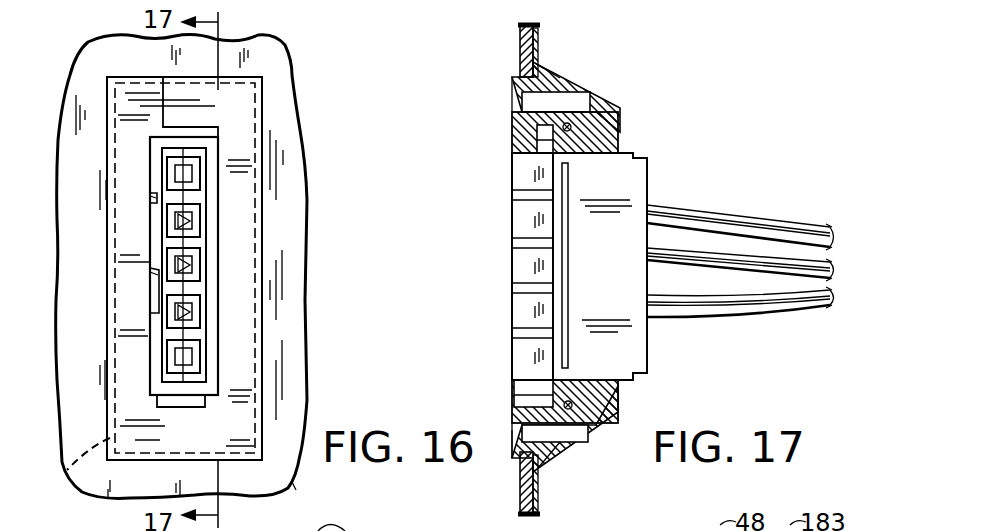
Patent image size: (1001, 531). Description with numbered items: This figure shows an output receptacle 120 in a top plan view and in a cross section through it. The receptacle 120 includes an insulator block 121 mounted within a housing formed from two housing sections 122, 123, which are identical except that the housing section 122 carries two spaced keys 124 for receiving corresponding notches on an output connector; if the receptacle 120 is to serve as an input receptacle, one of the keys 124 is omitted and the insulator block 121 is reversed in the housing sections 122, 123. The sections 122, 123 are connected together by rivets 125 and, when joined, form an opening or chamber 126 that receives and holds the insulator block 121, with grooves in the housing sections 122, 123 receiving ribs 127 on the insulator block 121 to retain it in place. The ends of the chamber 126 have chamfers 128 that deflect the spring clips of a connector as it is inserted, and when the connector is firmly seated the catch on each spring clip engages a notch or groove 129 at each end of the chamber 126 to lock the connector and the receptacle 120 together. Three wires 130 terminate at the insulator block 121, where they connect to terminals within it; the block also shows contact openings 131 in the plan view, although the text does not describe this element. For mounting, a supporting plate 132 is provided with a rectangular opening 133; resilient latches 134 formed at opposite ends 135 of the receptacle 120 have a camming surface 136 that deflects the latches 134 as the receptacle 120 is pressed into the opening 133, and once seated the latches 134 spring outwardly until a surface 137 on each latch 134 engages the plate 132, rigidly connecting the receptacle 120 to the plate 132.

In FIG. 16, the output receptacle 120 is at (274, 90).
In FIG. 17, the output receptacle 120 is at (500, 258).
In FIG. 16, the insulator block 121 is at (200, 322).
In FIG. 17, the insulator block 121 is at (648, 328).
In FIG. 16, the housing section 122 is at (106, 366).
In FIG. 16, the housing section 123 is at (262, 358).
In FIG. 16, the keys 124 is at (153, 275).
In FIG. 17, the rivets 125 is at (615, 122).
In FIG. 16, the chamber 126 is at (153, 160).
In FIG. 17, the chamber 126 is at (600, 376).
In FIG. 17, the ribs 127 is at (568, 225).
In FIG. 17, the chamfers 128 is at (514, 132).
In FIG. 17, the groove 129 is at (545, 148).
In FIG. 17, the wires 130 is at (757, 298).
In FIG. 16, the contacts 131 is at (190, 312).
In FIG. 16, the supporting plate 132 is at (292, 485).
In FIG. 17, the supporting plate 132 is at (535, 30).
In FIG. 16, the rectangular opening 133 is at (64, 475).
In FIG. 17, the rectangular opening 133 is at (512, 432).
In FIG. 17, the resilient latches 134 is at (560, 78).
In FIG. 16, the ends 135 is at (90, 44).
In FIG. 17, the ends 135 is at (514, 75).
In FIG. 17, the camming surface 136 is at (596, 90).
In FIG. 17, the surface 137 is at (540, 62).